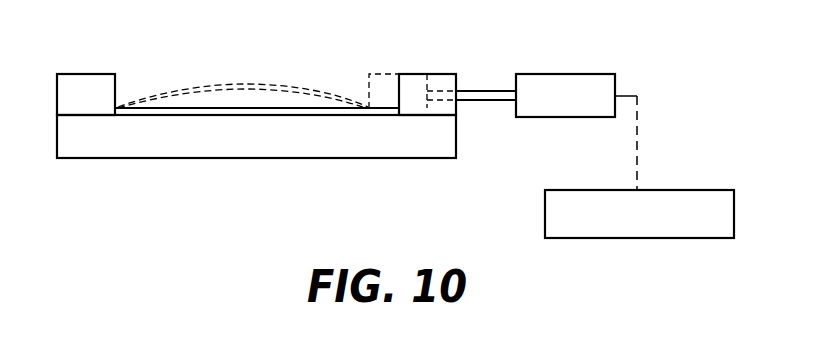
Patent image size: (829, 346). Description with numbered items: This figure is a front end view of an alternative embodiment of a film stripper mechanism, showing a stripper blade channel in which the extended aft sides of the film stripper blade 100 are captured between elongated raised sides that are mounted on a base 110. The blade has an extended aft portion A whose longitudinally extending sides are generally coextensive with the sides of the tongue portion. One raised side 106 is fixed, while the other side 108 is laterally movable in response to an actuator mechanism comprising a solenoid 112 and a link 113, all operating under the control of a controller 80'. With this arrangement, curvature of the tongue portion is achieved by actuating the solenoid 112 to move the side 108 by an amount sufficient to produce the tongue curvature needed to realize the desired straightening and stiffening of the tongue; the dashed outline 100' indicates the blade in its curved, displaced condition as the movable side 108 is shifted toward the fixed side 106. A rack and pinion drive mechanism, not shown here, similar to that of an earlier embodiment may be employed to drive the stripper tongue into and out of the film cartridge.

The fixed side 106 is at (82, 74).
The film stripper blade 100 is at (257, 65).
The bulged film position 100' is at (243, 74).
The extended aft portion A is at (192, 108).
The laterally movable side 108 is at (438, 74).
The base 110 is at (277, 158).
The solenoid 112 is at (573, 74).
The link 113 is at (490, 101).
The controller 80' is at (639, 167).